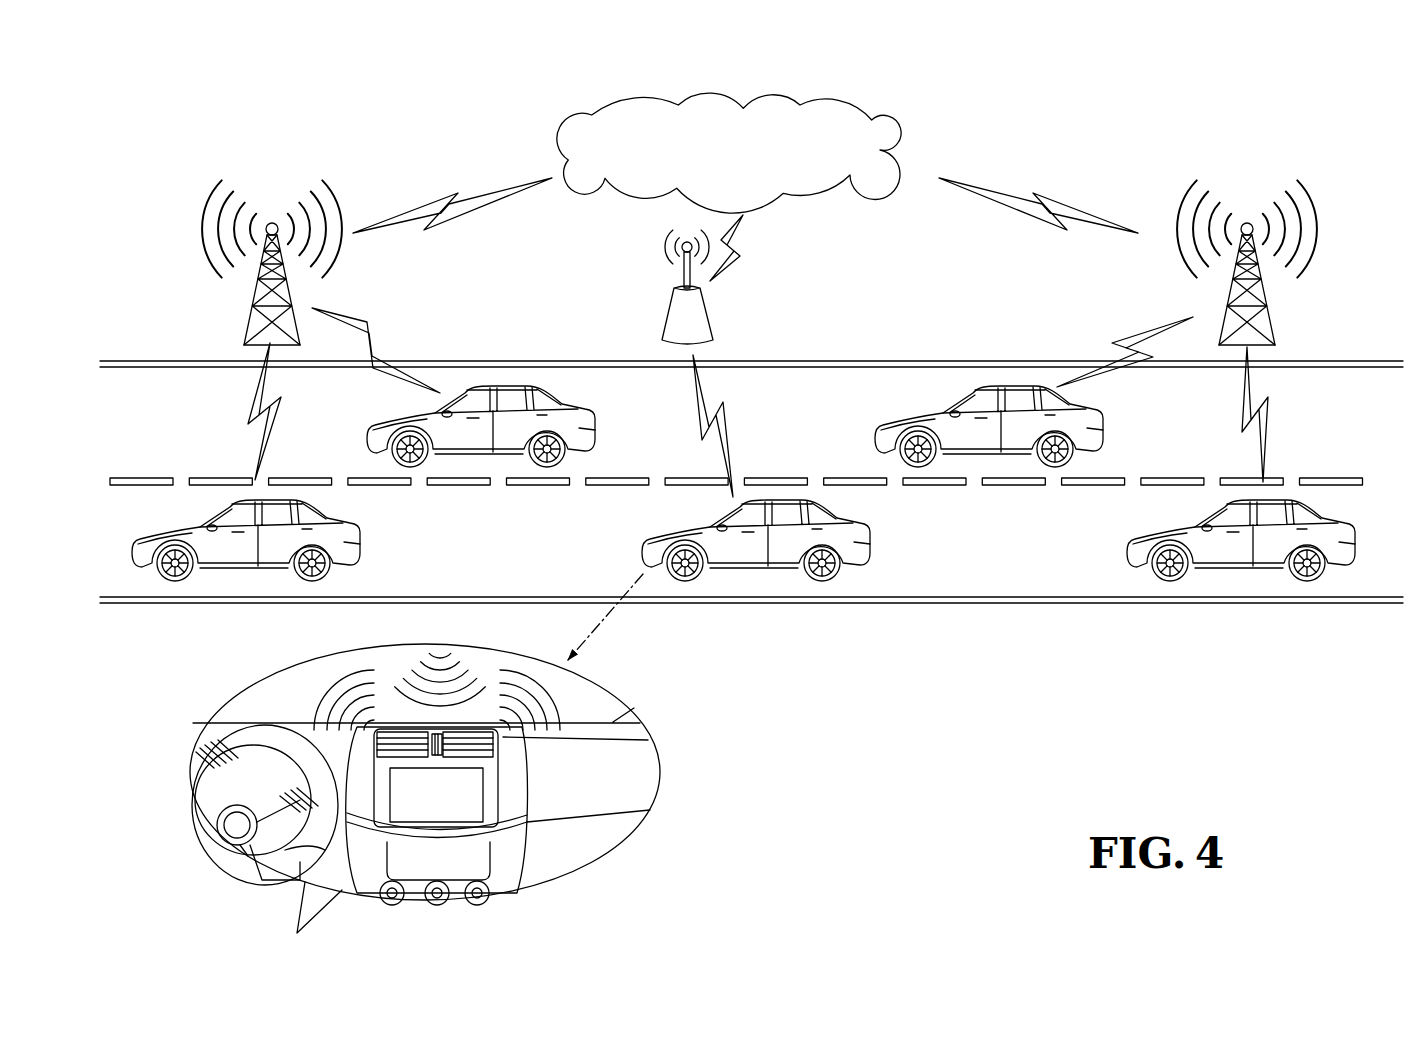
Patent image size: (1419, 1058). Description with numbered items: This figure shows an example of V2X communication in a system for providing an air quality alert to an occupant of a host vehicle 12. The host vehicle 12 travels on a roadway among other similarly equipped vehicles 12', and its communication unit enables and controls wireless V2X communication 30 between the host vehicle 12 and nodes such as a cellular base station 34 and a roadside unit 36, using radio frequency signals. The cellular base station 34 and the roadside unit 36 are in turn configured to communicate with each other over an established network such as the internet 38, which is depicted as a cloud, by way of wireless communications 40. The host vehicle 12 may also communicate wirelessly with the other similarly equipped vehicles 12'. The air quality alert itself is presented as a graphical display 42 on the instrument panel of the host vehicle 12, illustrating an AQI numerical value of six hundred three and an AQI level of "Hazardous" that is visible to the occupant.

The host vehicle 12 is at (756, 583).
The other similarly equipped vehicles 12' is at (743, 485).
The wireless V2X communication 30 is at (248, 382).
The cellular base station 34 is at (245, 323).
The roadside unit 36 is at (711, 311).
The internet 38 is at (736, 98).
The wireless communications 40 is at (472, 191).
The graphical display 42 is at (663, 753).